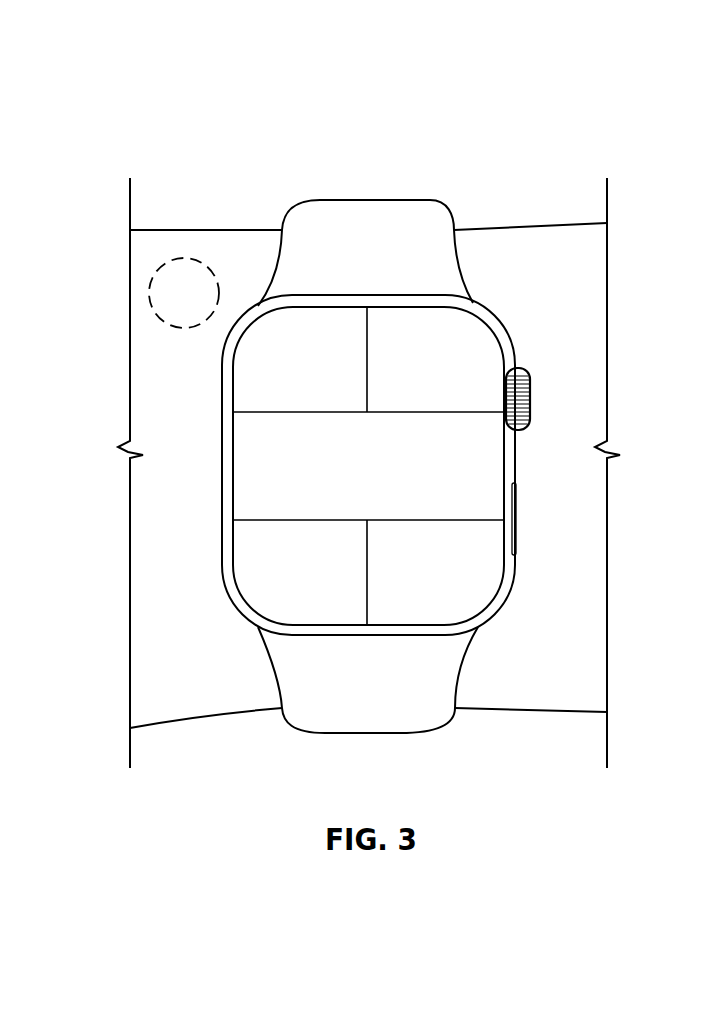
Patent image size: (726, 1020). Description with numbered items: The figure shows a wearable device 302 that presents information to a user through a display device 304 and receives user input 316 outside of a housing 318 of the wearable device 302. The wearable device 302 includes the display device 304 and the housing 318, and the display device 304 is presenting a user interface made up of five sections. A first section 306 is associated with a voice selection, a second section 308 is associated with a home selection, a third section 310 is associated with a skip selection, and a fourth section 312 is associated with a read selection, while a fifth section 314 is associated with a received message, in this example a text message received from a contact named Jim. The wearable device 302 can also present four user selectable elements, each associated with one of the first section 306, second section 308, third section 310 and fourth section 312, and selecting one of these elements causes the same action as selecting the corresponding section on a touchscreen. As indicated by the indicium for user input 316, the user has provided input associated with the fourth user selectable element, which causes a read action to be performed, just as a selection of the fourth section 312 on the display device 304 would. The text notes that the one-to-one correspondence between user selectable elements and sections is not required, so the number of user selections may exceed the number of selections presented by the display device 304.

The wearable device 302 is at (371, 401).
The display device 304 is at (371, 365).
The first section 306 is at (468, 343).
The second section 308 is at (468, 588).
The third section 310 is at (267, 592).
The fourth section 312 is at (267, 341).
The fifth section 314 is at (267, 436).
The user input 316 is at (180, 258).
The housing 318 is at (493, 613).